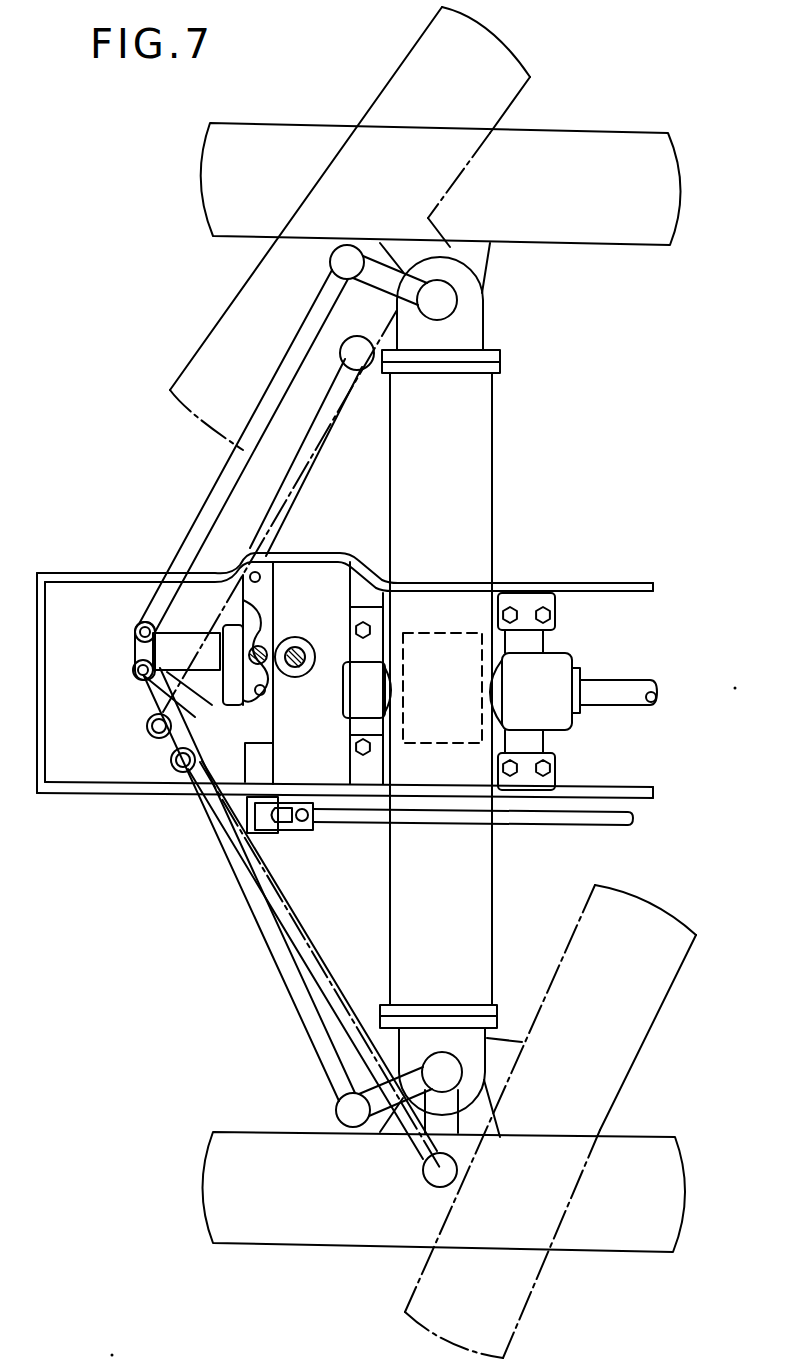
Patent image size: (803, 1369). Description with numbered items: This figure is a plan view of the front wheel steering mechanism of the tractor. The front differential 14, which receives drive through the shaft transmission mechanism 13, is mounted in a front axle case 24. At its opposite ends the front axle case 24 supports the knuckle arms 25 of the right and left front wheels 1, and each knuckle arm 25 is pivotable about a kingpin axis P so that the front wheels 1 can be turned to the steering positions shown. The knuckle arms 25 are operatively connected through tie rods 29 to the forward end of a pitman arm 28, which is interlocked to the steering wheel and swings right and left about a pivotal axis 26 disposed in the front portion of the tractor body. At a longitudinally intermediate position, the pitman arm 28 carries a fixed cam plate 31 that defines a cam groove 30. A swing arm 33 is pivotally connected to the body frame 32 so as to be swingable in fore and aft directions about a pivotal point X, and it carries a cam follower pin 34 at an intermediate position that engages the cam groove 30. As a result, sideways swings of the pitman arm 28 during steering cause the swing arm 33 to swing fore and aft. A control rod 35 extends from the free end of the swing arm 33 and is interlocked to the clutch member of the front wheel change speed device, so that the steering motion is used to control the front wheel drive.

The front wheel 1 is at (207, 177).
The shaft transmission mechanism 13 is at (618, 676).
The front differential 14 is at (458, 630).
The front axle case 24 is at (490, 410).
The knuckle arm 25 is at (397, 270).
The pivotal axis 26 is at (305, 645).
The pitman arm 28 is at (143, 662).
The tie rod 29 is at (261, 408).
The cam groove 30 is at (272, 696).
The cam plate 31 is at (248, 640).
The body frame 32 is at (62, 572).
The swing arm 33 is at (262, 759).
The cam follower pin 34 is at (250, 647).
The control rod 35 is at (553, 828).
The kingpin axis P is at (440, 300).
The pivotal point X is at (300, 748).